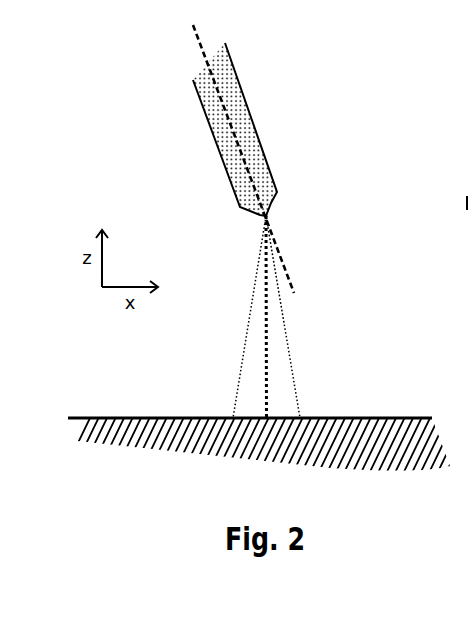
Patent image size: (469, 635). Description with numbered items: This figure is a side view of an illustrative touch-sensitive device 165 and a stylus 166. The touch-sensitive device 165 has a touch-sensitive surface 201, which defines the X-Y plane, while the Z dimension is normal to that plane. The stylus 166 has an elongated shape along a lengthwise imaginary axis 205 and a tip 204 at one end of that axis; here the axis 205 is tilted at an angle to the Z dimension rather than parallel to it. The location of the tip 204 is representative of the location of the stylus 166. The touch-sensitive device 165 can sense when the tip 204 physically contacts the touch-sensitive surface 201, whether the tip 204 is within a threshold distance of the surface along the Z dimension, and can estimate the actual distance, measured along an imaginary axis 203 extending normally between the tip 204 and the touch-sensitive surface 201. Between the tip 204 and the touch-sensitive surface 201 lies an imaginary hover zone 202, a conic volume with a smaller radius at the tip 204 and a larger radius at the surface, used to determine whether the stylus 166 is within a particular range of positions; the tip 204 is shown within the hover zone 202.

The stylus 166 is at (213, 142).
The lengthwise imaginary axis 205 is at (215, 73).
The tip 204 is at (268, 214).
The hover zone 202 is at (288, 318).
The imaginary axis 203 is at (267, 375).
The touch-sensitive surface 201 is at (168, 418).
The touch-sensitive device 165 is at (399, 456).